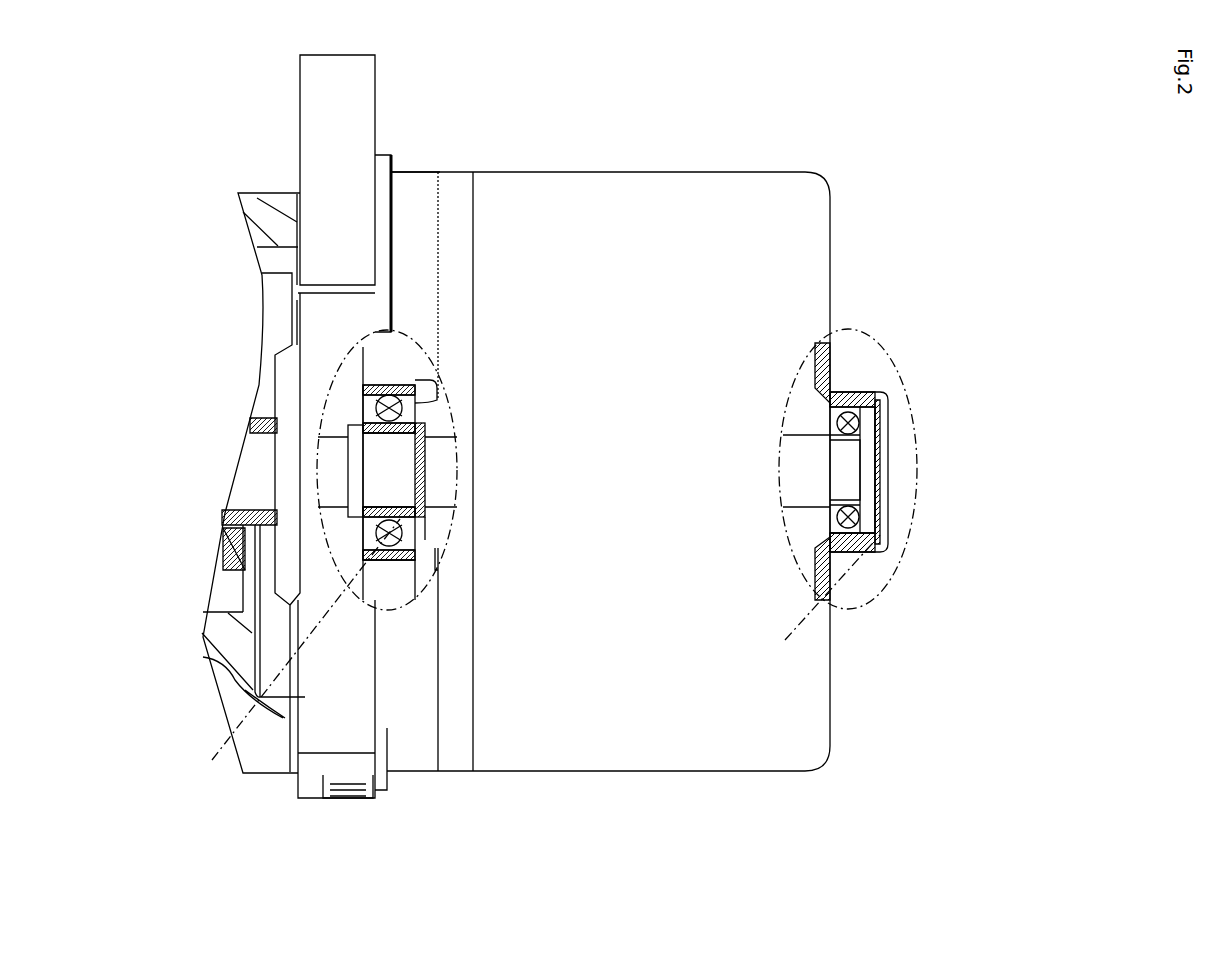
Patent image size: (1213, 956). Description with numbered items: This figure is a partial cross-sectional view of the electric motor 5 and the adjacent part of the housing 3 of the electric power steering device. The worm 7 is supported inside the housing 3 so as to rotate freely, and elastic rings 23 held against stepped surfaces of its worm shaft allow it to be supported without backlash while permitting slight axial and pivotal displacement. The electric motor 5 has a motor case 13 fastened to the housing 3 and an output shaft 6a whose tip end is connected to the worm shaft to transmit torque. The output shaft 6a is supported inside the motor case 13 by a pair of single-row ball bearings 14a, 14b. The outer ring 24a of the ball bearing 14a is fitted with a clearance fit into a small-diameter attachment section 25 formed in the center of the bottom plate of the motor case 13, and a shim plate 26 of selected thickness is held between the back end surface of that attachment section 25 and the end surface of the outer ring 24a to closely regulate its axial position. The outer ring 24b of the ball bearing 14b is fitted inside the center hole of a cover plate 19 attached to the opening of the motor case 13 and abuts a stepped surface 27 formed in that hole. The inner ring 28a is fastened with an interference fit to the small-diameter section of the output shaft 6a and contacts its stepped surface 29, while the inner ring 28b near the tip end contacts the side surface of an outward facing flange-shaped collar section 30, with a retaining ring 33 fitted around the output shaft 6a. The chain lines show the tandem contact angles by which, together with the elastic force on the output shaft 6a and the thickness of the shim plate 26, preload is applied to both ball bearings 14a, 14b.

The housing 3 is at (268, 207).
The electric motor 5 is at (770, 170).
The output shaft 6a is at (473, 457).
The worm 7 is at (225, 505).
The motor case 13 is at (722, 195).
The ball bearing 14a is at (845, 392).
The ball bearing 14b is at (392, 386).
The cover plate 19 is at (415, 376).
The elastic rings 23 is at (220, 545).
The outer ring 24a is at (855, 540).
The outer ring 24b is at (392, 558).
The small-diameter attachment section 25 is at (882, 430).
The shim plate 26 is at (870, 530).
The stepped surface 27 is at (447, 470).
The inner ring 28a is at (858, 493).
The inner ring 28b is at (365, 507).
The stepped surface 29 is at (818, 537).
The collar section 30 is at (350, 425).
The retaining ring 33 is at (425, 535).